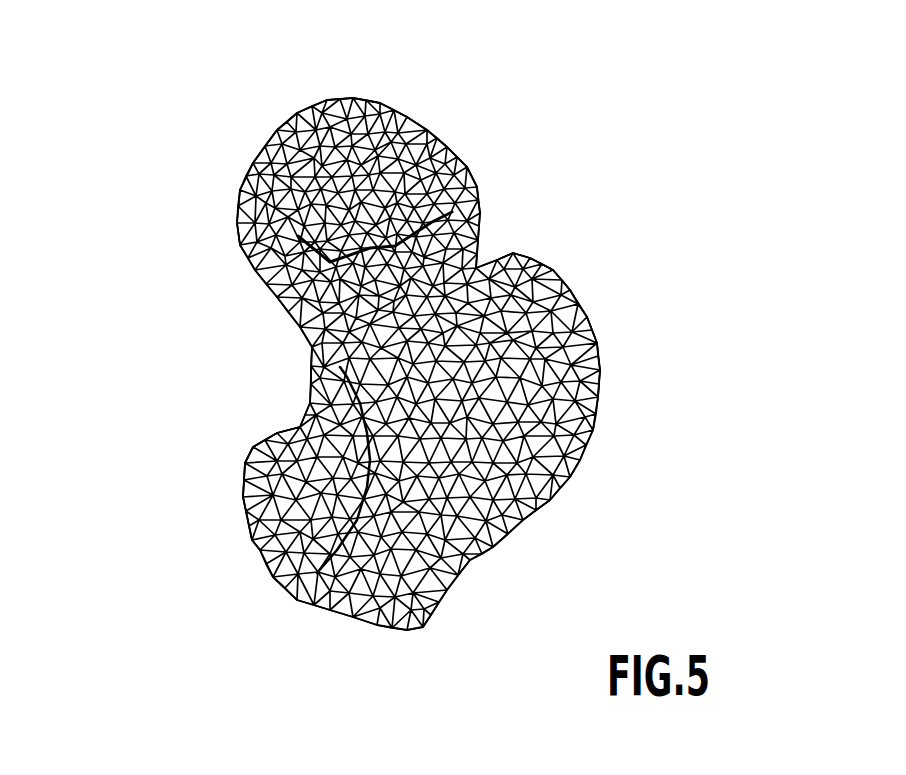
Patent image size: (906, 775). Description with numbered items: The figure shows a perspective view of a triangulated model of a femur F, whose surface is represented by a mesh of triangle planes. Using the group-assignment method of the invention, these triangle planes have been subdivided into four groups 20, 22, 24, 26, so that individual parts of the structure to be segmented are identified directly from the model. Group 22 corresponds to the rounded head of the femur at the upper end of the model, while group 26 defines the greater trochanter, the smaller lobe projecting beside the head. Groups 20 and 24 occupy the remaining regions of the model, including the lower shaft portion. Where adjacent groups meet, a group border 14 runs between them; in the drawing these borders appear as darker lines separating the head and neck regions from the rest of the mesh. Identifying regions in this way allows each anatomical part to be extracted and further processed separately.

The group 20 is at (494, 553).
The group 22 is at (254, 122).
The group border 14 is at (345, 381).
The group 26 is at (528, 243).
The group 24 is at (222, 496).
The femur F is at (168, 480).